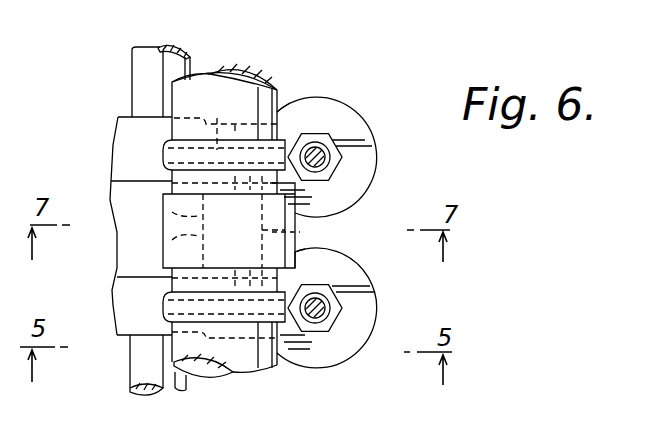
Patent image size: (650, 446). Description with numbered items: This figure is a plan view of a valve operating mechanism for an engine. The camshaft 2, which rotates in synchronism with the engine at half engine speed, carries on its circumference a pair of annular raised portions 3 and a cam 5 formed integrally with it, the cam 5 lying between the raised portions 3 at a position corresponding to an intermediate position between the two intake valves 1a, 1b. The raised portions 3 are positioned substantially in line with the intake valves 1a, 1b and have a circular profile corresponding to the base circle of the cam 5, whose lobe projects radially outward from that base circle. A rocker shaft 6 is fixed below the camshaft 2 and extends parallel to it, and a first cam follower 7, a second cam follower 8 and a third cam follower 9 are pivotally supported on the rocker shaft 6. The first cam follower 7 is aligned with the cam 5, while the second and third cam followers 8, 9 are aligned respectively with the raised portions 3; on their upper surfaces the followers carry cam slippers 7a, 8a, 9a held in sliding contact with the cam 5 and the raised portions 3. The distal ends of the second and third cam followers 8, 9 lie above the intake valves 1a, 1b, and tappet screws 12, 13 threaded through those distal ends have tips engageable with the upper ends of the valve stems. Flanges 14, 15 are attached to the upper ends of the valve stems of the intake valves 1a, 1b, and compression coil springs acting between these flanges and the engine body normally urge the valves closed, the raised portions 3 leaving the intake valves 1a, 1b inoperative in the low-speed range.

The intake valve 1a is at (357, 98).
The intake valve 1b is at (379, 244).
The camshaft 2 is at (238, 90).
The annular raised portions 3 is at (165, 160).
The cam 5 is at (164, 232).
The rocker shaft 6 is at (131, 368).
The first cam follower 7 is at (111, 207).
The cam slipper 7a is at (301, 225).
The second cam follower 8 is at (115, 127).
The cam slipper 8a is at (224, 107).
The third cam follower 9 is at (113, 294).
The cam slipper 9a is at (224, 356).
The tappet screw 12 is at (315, 146).
The tappet screw 13 is at (313, 314).
The flange 14 is at (366, 158).
The flange 15 is at (366, 310).